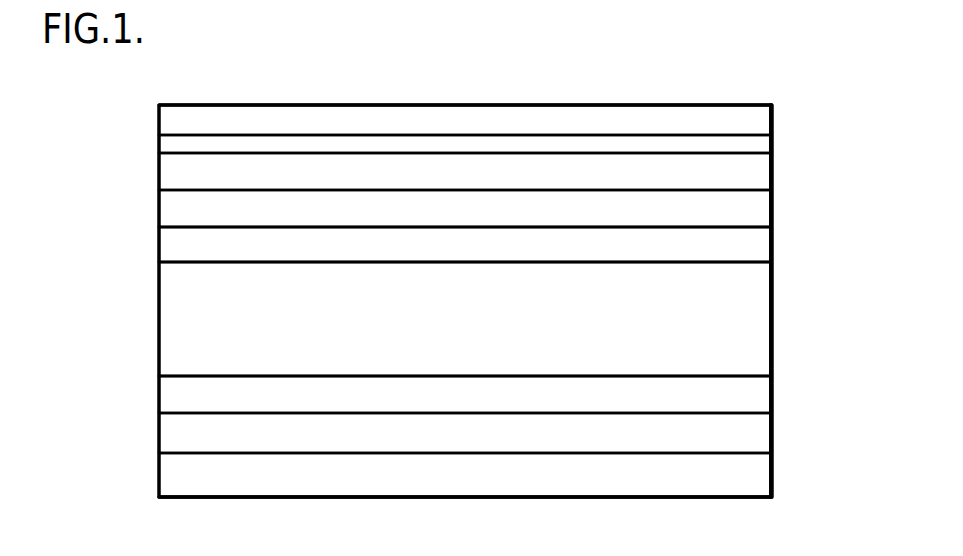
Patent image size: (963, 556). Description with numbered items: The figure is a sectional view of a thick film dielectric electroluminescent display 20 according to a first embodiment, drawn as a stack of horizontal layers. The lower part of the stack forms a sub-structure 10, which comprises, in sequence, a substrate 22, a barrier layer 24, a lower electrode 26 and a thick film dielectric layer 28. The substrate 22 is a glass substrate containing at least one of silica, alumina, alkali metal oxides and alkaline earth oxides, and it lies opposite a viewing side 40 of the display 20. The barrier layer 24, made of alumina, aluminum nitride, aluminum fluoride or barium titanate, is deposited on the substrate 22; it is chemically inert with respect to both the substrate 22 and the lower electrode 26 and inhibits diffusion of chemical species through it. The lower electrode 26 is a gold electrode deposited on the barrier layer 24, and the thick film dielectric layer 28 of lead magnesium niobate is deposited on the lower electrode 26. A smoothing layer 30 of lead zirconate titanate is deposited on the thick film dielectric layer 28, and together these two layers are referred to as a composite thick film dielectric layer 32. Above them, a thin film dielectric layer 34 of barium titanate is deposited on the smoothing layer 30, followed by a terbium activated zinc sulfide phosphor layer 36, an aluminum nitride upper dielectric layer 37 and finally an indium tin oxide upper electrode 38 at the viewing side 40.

The sub-structure 10 is at (65, 260).
The thick film dielectric electroluminescent display 20 is at (893, 125).
The substrate 22 is at (765, 477).
The barrier layer 24 is at (757, 430).
The lower electrode 26 is at (757, 392).
The thick film dielectric layer 28 is at (756, 327).
The smoothing layer 30 is at (760, 247).
The composite thick film dielectric layer 32 is at (131, 228).
The thin film dielectric layer 34 is at (760, 208).
The phosphor layer 36 is at (760, 172).
The upper dielectric layer 37 is at (772, 142).
The upper electrode 38 is at (765, 118).
The viewing side 40 is at (414, 98).